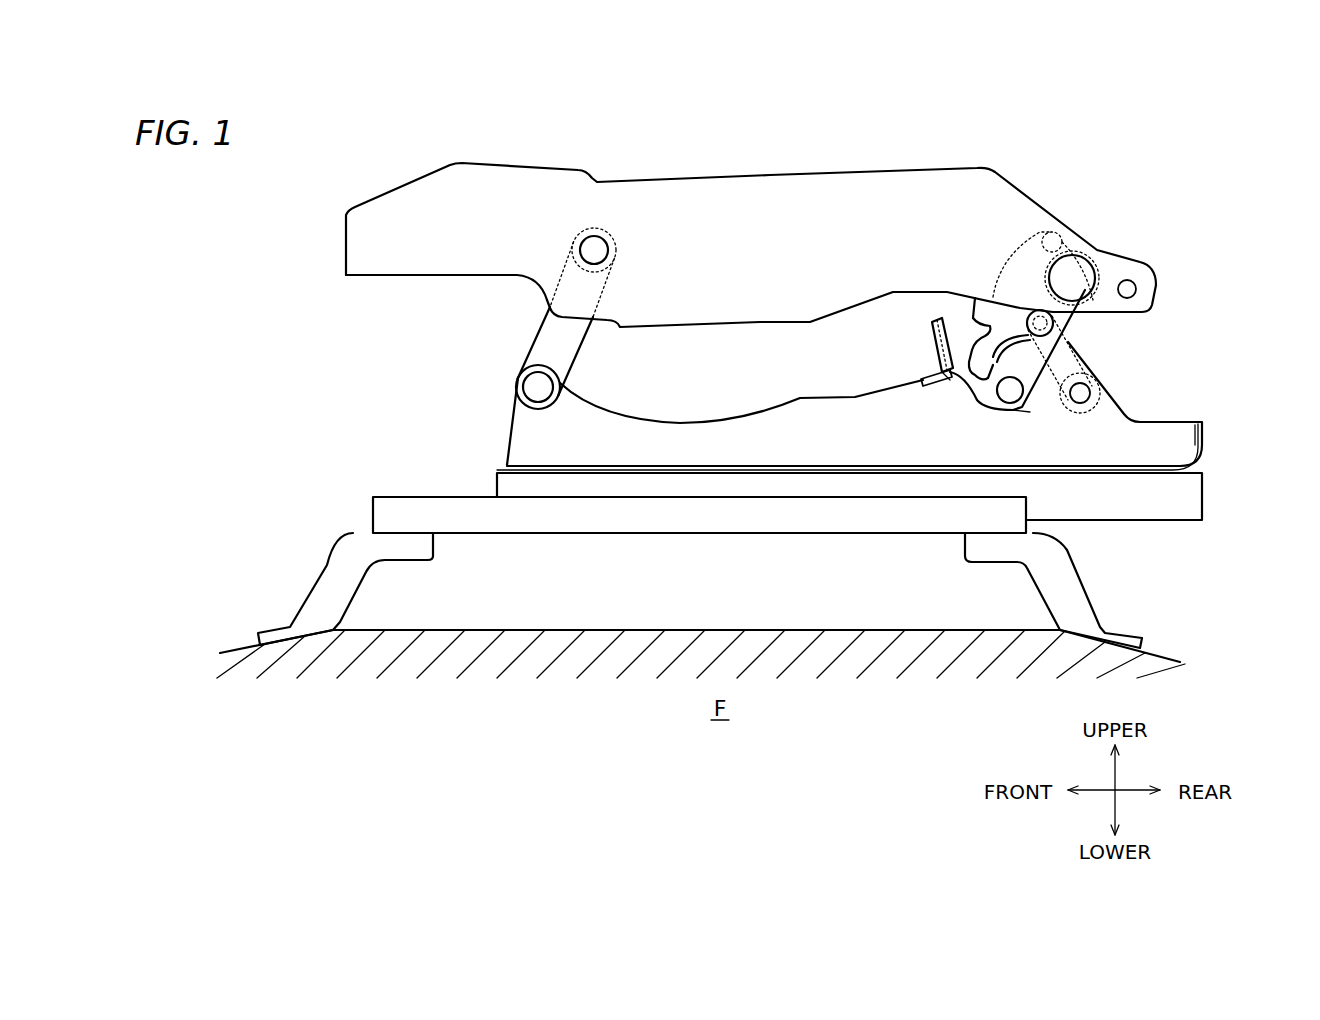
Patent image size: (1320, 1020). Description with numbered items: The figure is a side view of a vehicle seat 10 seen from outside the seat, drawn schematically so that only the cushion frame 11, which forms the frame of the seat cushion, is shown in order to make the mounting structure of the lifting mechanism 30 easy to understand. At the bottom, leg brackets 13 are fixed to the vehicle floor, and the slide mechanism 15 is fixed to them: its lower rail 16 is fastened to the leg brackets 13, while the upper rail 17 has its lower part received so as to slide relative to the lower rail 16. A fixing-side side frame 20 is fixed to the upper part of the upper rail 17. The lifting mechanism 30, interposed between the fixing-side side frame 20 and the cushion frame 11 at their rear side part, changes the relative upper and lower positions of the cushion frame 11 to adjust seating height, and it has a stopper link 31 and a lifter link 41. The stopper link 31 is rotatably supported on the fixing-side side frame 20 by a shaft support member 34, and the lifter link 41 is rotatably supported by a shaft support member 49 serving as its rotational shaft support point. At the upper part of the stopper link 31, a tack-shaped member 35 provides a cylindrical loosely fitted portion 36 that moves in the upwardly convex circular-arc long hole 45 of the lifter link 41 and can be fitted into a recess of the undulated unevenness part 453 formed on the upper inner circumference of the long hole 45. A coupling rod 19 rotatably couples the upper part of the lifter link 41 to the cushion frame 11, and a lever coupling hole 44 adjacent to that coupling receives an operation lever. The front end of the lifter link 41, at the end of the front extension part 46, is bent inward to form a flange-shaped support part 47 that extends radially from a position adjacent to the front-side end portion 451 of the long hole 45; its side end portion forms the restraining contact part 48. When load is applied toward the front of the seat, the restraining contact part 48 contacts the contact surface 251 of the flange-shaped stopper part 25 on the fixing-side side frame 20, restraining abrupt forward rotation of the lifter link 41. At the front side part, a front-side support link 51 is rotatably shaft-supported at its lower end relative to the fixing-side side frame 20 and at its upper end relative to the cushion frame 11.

The vehicle seat 10 is at (751, 285).
The cushion frame 11 is at (1008, 200).
The leg brackets 13 is at (327, 590).
The slide mechanism 15 is at (744, 477).
The lower rail 16 is at (390, 520).
The upper rail 17 is at (507, 481).
The coupling rod 19 is at (1087, 277).
The fixing-side side frame 20 is at (1205, 437).
The stopper part 25 is at (880, 360).
The contact surface 251 is at (922, 378).
The lifting mechanism 30 is at (1202, 338).
The stopper link 31 is at (1083, 364).
The shaft support member 34 is at (1093, 390).
The tack-shaped member 35 is at (1058, 312).
The loosely fitted portion 36 is at (1080, 262).
The lifter link 41 is at (1067, 320).
The lever coupling hole 44 is at (1052, 232).
The long hole 45 is at (1008, 403).
The front-side end portion 451 is at (983, 387).
The unevenness part 453 is at (993, 305).
The front extension part 46 is at (952, 330).
The flange-shaped support part 47 is at (932, 345).
The restraining contact part 48 is at (947, 383).
The shaft support member 49 is at (1033, 410).
The front-side support link 51 is at (545, 340).